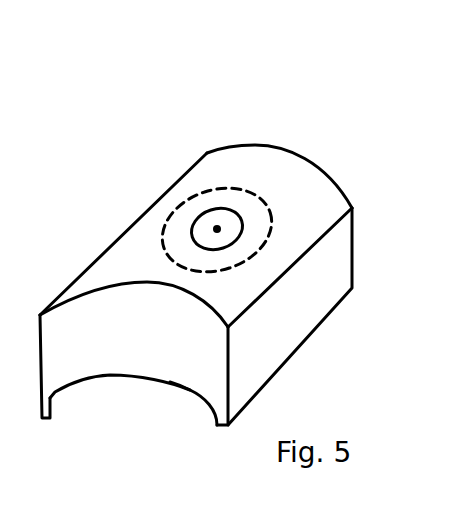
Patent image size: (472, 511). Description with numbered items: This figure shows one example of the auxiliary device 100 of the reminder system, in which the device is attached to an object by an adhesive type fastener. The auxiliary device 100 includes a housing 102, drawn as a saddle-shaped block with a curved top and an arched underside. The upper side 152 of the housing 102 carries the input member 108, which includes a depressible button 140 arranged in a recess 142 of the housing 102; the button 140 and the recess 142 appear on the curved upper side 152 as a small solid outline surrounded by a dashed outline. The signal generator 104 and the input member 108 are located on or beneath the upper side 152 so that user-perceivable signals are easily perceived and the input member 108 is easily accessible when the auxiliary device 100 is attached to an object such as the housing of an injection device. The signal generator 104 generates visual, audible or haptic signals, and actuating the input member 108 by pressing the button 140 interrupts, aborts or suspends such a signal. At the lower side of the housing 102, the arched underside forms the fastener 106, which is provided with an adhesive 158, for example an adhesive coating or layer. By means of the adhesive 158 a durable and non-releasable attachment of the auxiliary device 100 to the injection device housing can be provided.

The auxiliary device 100 is at (235, 266).
The housing 102 is at (324, 268).
The signal generator 104 is at (174, 222).
The fastener 106 is at (145, 402).
The input member 108 is at (184, 187).
The button 140 is at (228, 218).
The recess 142 is at (270, 182).
The upper side 152 is at (270, 163).
The adhesive 158 is at (197, 395).